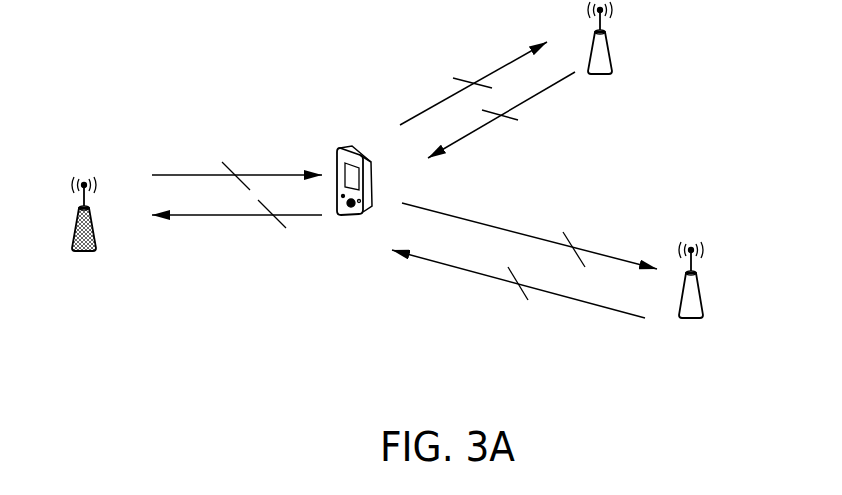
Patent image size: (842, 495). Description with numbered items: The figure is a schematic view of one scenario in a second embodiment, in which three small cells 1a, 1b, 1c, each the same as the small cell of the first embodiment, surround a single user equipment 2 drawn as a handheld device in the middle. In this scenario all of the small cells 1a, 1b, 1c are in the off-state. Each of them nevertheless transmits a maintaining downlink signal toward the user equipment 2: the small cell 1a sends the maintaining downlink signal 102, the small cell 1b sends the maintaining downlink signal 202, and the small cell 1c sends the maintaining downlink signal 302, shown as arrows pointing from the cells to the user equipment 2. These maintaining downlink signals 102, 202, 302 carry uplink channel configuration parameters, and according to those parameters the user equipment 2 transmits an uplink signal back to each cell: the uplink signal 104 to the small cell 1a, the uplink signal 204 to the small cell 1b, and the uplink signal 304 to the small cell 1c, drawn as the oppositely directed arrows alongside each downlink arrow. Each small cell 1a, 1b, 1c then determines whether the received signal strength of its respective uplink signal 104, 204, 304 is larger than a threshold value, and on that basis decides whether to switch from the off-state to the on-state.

The small cell 1a is at (94, 219).
The small cell 1b is at (612, 41).
The small cell 1c is at (703, 283).
The user equipment 2 is at (360, 148).
The maintaining downlink signal 102 is at (237, 174).
The uplink signal 104 is at (269, 214).
The uplink signal 204 is at (472, 83).
The maintaining downlink signal 202 is at (500, 115).
The uplink signal 304 is at (574, 250).
The maintaining downlink signal 302 is at (518, 283).